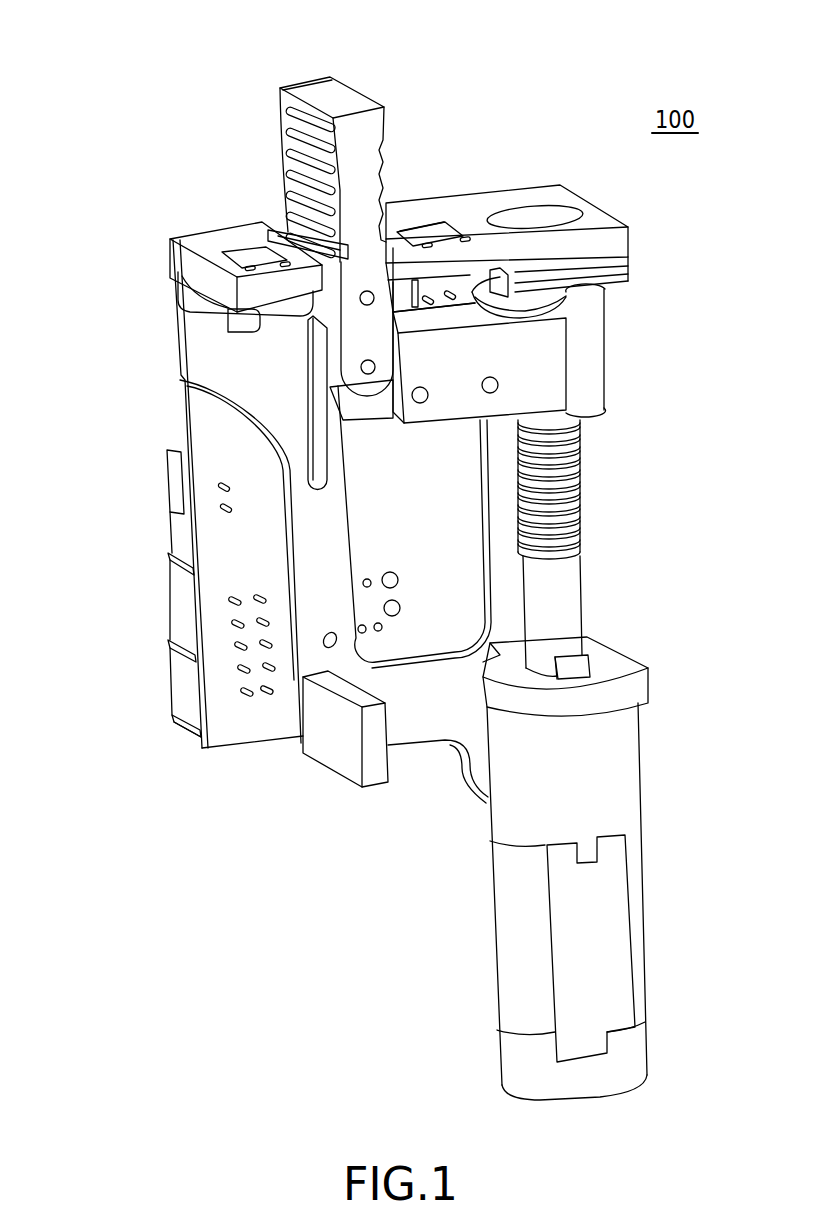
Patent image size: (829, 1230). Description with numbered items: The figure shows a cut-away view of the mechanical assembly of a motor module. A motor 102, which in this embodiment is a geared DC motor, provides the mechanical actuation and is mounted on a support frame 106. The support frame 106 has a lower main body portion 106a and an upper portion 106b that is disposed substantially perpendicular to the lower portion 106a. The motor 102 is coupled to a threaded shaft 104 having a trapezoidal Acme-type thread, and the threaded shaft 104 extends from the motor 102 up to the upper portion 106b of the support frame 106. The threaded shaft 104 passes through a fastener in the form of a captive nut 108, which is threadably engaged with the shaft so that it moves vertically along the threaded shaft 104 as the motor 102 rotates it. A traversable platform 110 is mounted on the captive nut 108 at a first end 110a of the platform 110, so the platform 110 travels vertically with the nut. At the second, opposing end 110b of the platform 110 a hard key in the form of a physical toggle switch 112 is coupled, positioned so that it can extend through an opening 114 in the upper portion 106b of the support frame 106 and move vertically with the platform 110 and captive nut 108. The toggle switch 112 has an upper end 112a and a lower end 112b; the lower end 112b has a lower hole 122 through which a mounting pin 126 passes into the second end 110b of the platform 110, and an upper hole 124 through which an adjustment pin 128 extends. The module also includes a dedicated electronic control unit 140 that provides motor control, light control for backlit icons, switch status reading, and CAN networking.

The motor 102 is at (618, 992).
The threaded shaft 104 is at (577, 540).
The support frame 106 is at (437, 633).
The lower main body portion 106a is at (260, 688).
The upper portion 106b is at (613, 256).
The captive nut 108 is at (588, 322).
The traversable platform 110 is at (455, 400).
The first end 110a is at (497, 385).
The second end 110b is at (183, 540).
The toggle switch 112 is at (283, 120).
The upper end 112a is at (327, 90).
The lower end 112b is at (337, 343).
The opening 114 is at (400, 258).
The lower hole 122 is at (363, 337).
The upper hole 124 is at (232, 320).
The mounting pin 126 is at (342, 733).
The adjustment pin 128 is at (428, 234).
The electronic control unit 140 is at (193, 722).